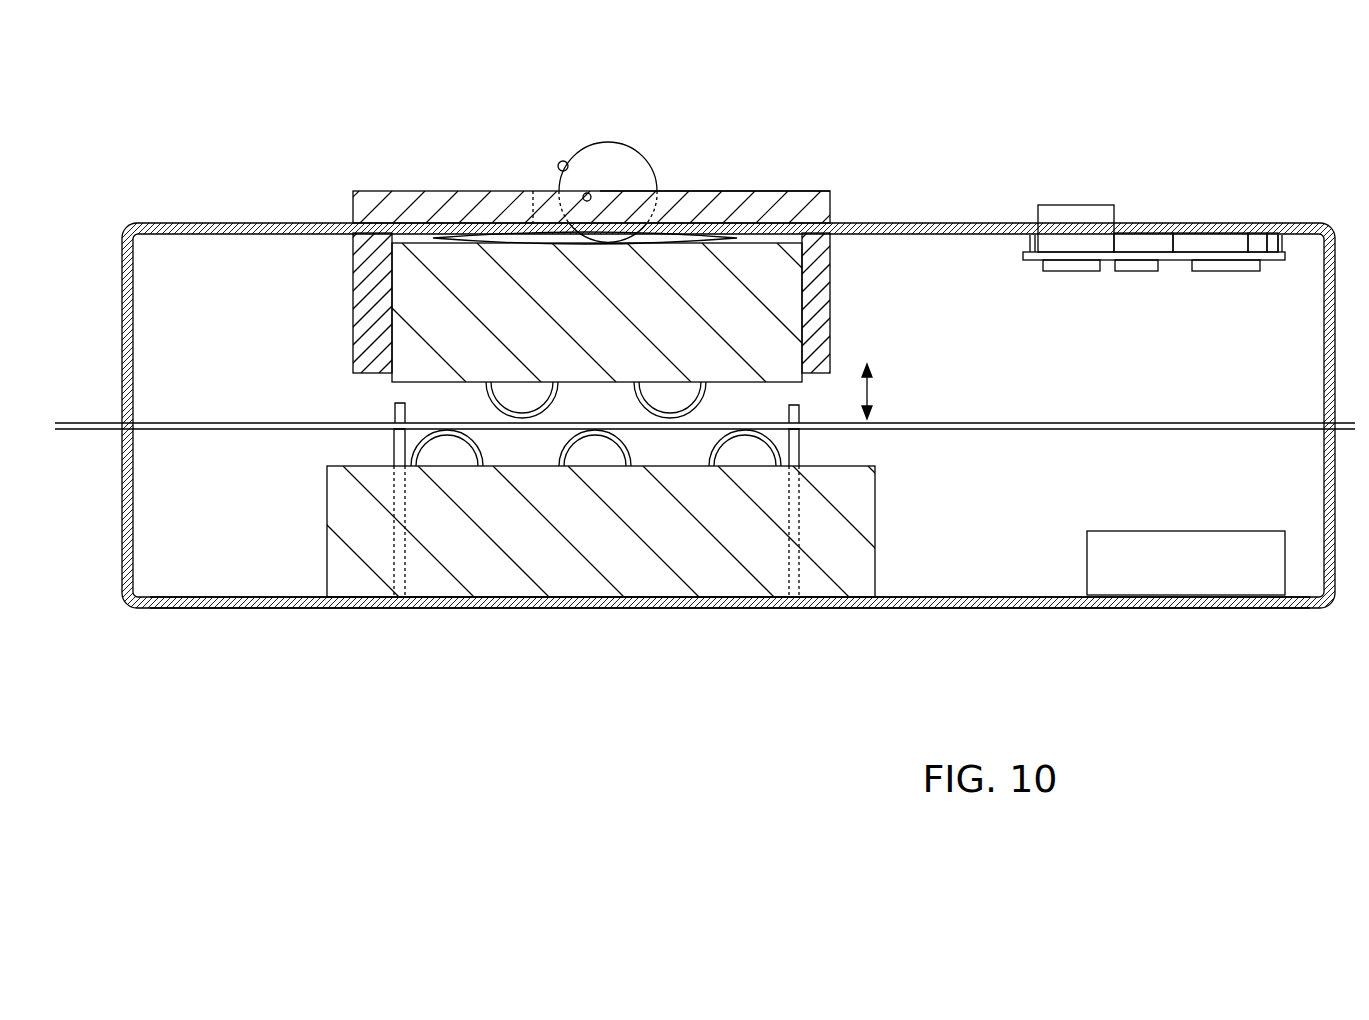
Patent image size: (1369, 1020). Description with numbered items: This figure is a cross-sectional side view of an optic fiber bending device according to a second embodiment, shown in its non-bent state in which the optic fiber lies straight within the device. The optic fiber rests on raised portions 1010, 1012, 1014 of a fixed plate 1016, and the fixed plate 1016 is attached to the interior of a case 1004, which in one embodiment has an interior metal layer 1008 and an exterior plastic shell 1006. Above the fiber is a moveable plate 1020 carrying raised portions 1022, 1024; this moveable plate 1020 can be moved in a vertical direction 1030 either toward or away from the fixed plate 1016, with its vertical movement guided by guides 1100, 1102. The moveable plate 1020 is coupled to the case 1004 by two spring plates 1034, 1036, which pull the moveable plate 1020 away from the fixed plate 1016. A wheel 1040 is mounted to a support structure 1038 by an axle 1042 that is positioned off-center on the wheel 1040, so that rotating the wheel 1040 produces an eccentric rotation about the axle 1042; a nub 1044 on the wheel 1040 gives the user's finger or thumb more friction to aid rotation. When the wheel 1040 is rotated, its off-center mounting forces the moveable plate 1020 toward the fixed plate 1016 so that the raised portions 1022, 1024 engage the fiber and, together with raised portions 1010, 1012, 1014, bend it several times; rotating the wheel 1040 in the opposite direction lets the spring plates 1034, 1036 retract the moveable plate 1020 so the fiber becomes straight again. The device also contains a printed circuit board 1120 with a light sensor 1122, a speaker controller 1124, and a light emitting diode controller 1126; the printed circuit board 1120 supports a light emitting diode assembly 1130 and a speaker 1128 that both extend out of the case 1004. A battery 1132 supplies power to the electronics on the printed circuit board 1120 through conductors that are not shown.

The case 1004 is at (122, 613).
The exterior plastic shell 1006 is at (197, 607).
The interior metal layer 1008 is at (177, 595).
The raised portion 1010 is at (447, 433).
The raised portion 1012 is at (595, 433).
The raised portion 1014 is at (742, 433).
The fixed plate 1016 is at (458, 582).
The moveable plate 1020 is at (792, 282).
The raised portion 1022 is at (520, 415).
The raised portion 1024 is at (670, 410).
The vertical direction 1030 is at (873, 393).
The spring plate 1034 is at (433, 237).
The spring plate 1036 is at (733, 191).
The support structure 1038 is at (490, 191).
The wheel 1040 is at (642, 167).
The axle 1042 is at (587, 193).
The nub 1044 is at (563, 161).
The guide 1100 is at (355, 320).
The guide 1102 is at (830, 308).
The printed circuit board 1120 is at (1267, 240).
The light sensor 1122 is at (1123, 271).
The speaker controller 1124 is at (1213, 271).
The light emitting diode controller 1126 is at (1065, 271).
The speaker 1128 is at (1207, 235).
The light emitting diode assembly 1130 is at (1053, 204).
The battery 1132 is at (1153, 572).